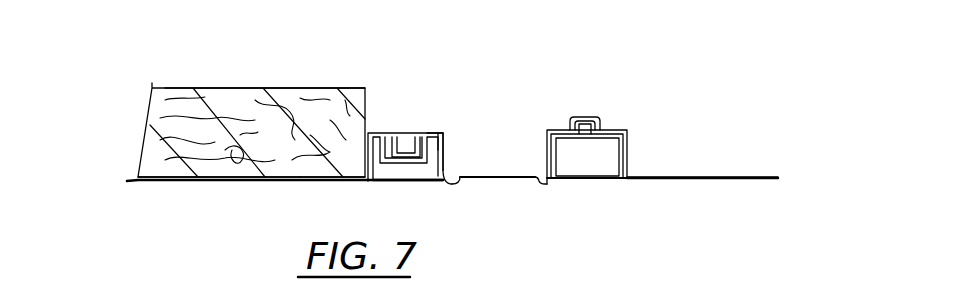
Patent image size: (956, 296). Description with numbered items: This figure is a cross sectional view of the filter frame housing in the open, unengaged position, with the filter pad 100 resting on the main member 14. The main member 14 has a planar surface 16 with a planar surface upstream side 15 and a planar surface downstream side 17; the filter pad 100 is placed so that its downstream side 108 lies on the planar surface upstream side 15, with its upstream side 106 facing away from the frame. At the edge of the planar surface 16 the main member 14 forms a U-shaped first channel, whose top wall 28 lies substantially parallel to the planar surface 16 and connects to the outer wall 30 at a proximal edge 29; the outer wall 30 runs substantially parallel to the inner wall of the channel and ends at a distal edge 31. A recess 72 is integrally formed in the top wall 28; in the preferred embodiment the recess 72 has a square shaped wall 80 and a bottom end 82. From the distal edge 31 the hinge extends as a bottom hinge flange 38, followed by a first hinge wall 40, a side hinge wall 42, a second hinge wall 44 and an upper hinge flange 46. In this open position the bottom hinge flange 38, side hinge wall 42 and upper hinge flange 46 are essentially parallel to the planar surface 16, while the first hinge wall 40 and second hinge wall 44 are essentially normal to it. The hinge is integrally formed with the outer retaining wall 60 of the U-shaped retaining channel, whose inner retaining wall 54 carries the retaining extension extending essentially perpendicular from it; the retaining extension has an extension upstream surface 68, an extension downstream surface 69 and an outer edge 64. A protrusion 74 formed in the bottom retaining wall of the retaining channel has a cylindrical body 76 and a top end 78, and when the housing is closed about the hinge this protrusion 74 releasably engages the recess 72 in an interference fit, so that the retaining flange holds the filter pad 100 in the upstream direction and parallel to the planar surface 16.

The filter pad 100 is at (168, 113).
The upstream side 106 is at (278, 88).
The downstream side 108 is at (157, 183).
The main member 14 is at (205, 199).
The planar surface upstream side 15 is at (247, 182).
The planar surface 16 is at (180, 182).
The planar surface downstream side 17 is at (307, 182).
The recess 72 is at (377, 132).
The square shaped wall 80 is at (418, 132).
The bottom end 82 is at (400, 152).
The top wall 28 is at (436, 131).
The proximal edge 29 is at (441, 134).
The outer wall 30 is at (445, 153).
The distal edge 31 is at (440, 183).
The bottom hinge flange 38 is at (453, 186).
The first hinge wall 40 is at (464, 186).
The side hinge wall 42 is at (503, 179).
The second hinge wall 44 is at (534, 179).
The upper hinge flange 46 is at (545, 186).
The inner retaining wall 54 is at (627, 149).
The outer retaining wall 60 is at (557, 158).
The top end 78 is at (573, 117).
The cylindrical body 76 is at (601, 119).
The protrusion 74 is at (592, 114).
The extension upstream surface 68 is at (721, 179).
The extension downstream surface 69 is at (707, 176).
The outer edge 64 is at (786, 180).